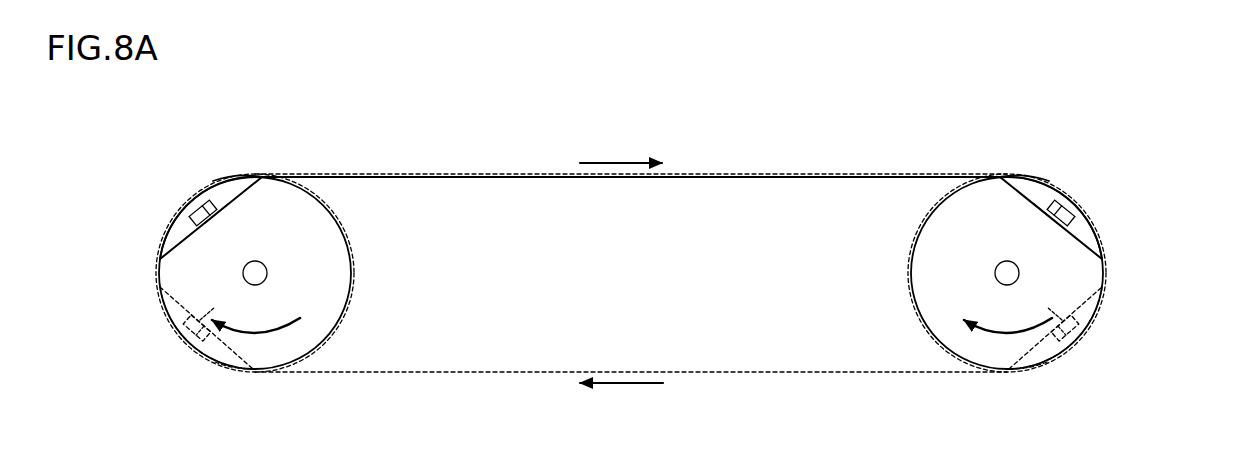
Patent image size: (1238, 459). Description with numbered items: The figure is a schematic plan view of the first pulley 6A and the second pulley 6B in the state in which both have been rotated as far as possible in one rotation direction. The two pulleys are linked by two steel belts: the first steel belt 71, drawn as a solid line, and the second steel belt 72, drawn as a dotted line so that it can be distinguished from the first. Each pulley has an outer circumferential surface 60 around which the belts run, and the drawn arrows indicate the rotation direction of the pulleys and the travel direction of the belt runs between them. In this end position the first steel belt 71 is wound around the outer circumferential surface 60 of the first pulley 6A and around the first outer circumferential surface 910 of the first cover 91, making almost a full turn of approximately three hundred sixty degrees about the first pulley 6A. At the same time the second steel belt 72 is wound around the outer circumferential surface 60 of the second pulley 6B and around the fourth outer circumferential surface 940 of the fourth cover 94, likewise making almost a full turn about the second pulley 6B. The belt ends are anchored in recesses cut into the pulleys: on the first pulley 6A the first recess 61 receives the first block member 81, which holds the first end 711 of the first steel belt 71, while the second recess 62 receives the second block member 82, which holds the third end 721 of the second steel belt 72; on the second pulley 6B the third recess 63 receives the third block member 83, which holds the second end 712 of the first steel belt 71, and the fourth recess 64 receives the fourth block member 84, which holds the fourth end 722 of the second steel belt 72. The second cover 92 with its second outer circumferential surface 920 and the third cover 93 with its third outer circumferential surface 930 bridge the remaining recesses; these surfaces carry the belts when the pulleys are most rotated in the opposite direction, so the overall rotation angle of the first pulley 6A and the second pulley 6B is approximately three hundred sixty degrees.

The first pulley 6A is at (928, 279).
The second pulley 6B is at (332, 280).
The outer circumferential surface 60 is at (350, 238).
The first recess 61 is at (1096, 240).
The second recess 62 is at (1085, 307).
The third recess 63 is at (176, 244).
The fourth recess 64 is at (178, 308).
The first steel belt 71 is at (622, 179).
The second steel belt 72 is at (350, 305).
The first end 711 is at (1054, 209).
The second end 712 is at (208, 209).
The third end 721 is at (1066, 327).
The fourth end 722 is at (200, 327).
The first block member 81 is at (1068, 210).
The second block member 82 is at (1066, 340).
The third block member 83 is at (196, 210).
The fourth block member 84 is at (198, 338).
The first cover 91 is at (1047, 182).
The second cover 92 is at (1049, 362).
The third cover 93 is at (215, 182).
The fourth cover 94 is at (213, 362).
The first outer circumferential surface 910 is at (1088, 240).
The second outer circumferential surface 920 is at (1088, 334).
The third outer circumferential surface 930 is at (176, 217).
The fourth outer circumferential surface 940 is at (173, 332).